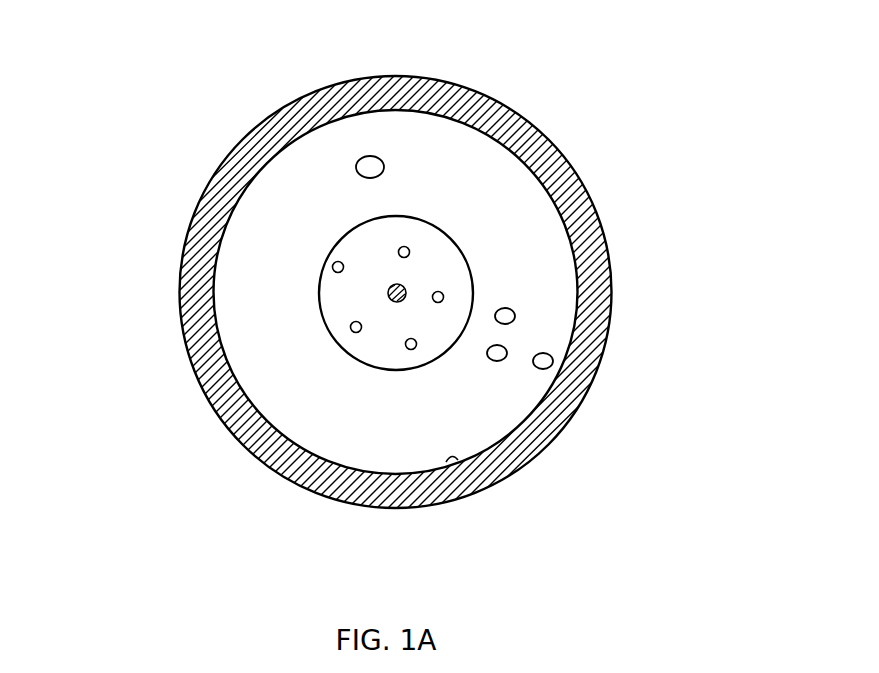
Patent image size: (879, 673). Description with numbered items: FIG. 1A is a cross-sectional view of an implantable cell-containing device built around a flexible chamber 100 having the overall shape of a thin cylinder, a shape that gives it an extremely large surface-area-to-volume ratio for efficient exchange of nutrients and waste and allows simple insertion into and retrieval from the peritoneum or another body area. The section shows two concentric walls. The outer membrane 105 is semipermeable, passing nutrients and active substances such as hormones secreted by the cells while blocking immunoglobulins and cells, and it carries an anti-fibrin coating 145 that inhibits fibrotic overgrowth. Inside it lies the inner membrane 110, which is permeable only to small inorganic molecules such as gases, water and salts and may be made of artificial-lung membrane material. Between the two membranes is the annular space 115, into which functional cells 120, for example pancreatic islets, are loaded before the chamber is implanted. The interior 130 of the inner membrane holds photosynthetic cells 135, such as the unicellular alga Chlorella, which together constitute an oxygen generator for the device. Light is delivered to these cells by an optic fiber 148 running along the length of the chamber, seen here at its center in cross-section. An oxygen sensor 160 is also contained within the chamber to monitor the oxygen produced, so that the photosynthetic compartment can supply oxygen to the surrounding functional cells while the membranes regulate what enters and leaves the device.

The chamber 100 is at (428, 292).
The outer membrane 105 is at (453, 457).
The inner membrane 110 is at (452, 348).
The annular space 115 is at (277, 215).
The functional cells 120 is at (516, 315).
The interior of inner membrane 130 is at (376, 372).
The photosynthetic cells 135 is at (350, 328).
The anti-fibrin coating 145 is at (565, 162).
The optic fiber 148 is at (387, 292).
The oxygen sensor 160 is at (365, 157).